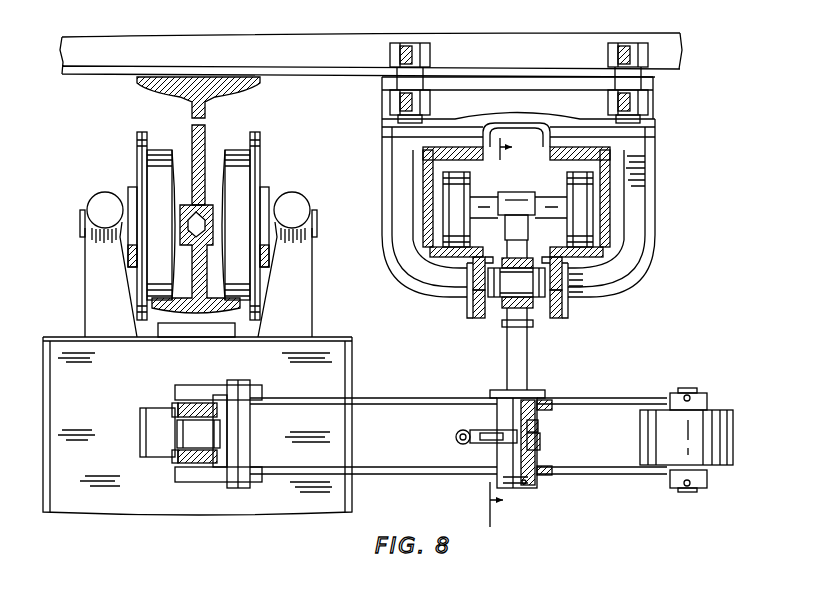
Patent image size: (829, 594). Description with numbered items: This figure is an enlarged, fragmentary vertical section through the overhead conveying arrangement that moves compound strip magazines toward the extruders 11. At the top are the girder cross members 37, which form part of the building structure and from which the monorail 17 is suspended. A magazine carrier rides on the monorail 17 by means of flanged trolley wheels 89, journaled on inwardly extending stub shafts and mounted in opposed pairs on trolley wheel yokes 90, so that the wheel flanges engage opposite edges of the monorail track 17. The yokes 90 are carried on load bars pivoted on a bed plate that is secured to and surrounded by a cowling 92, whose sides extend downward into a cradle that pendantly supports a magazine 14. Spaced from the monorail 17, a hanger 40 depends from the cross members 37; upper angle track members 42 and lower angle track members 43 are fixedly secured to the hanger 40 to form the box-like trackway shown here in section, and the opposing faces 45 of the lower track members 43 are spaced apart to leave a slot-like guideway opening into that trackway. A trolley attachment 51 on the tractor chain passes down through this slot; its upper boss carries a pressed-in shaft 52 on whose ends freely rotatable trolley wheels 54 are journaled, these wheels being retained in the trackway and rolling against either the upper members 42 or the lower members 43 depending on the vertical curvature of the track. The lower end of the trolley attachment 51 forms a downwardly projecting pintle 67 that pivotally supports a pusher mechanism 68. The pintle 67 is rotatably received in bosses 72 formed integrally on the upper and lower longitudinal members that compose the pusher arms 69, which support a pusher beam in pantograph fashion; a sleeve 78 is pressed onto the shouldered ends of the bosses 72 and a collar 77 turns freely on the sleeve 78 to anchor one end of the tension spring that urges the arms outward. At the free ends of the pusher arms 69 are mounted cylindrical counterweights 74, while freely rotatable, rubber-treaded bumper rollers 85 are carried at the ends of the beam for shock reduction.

The girder cross members 37 is at (500, 36).
The monorail 17 is at (203, 106).
The flanged trolley wheels 89 is at (160, 148).
The trolley wheel yokes 90 is at (88, 272).
The cowling 92 is at (338, 336).
The compound strip magazine 14 is at (354, 356).
The bumper rollers 85 is at (150, 410).
The pusher arms 69 is at (410, 399).
The hanger 40 is at (650, 173).
The upper angle track members 42 is at (552, 153).
The trolley wheels 54 is at (444, 209).
The shaft 52 is at (545, 218).
The opposing faces 45 is at (478, 265).
The lower angle track members 43 is at (480, 318).
The trolley attachment 51 is at (531, 357).
The pusher mechanism 68 is at (652, 366).
The bosses 72 is at (540, 407).
The pintles 67 is at (530, 487).
The sleeve 78 is at (540, 425).
The collar 77 is at (542, 440).
The cylindrical counterweights 74 is at (718, 410).
The extruders 11 is at (511, 332).